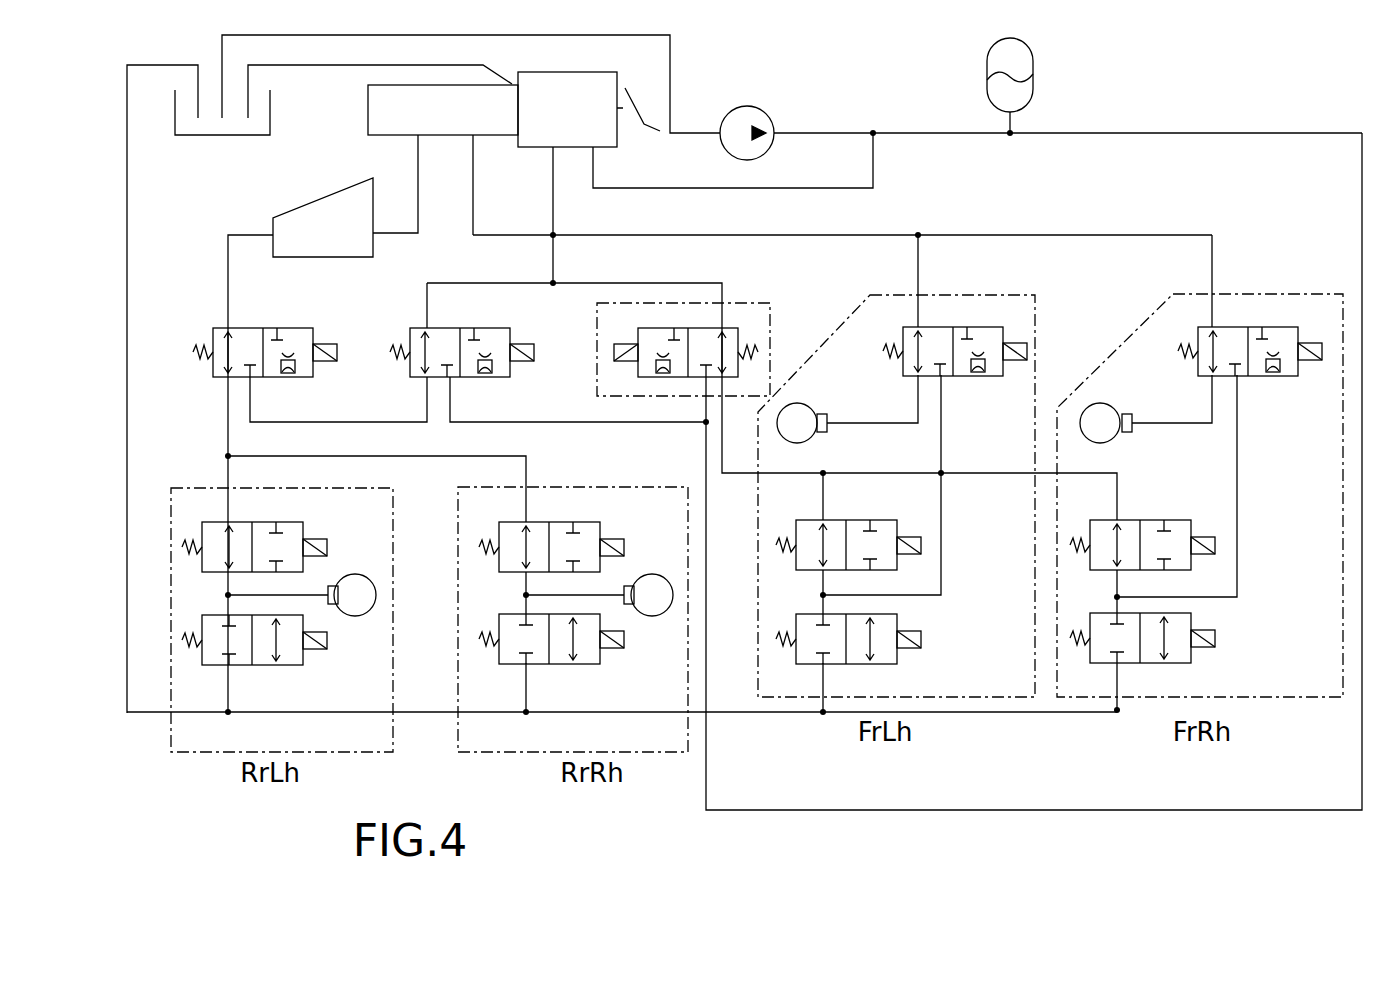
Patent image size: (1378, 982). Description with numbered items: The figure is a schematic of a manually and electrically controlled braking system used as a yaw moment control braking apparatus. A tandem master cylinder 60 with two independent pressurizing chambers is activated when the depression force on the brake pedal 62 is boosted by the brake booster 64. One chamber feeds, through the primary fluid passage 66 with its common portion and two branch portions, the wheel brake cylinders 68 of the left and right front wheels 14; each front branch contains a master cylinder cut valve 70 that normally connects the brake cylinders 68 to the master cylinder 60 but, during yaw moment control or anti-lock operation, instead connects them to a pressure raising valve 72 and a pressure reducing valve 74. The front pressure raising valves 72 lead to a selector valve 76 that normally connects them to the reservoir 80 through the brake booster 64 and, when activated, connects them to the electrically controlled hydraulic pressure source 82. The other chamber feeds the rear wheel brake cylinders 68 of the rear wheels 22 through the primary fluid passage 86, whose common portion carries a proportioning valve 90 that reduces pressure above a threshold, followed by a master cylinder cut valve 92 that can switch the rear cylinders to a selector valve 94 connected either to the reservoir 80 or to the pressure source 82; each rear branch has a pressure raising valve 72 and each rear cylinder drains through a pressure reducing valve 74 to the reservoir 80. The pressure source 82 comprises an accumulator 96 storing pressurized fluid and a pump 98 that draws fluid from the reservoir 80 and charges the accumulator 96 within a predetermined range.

The front wheels 14 is at (797, 410).
The rear wheels 22 is at (360, 585).
The master cylinder 60 is at (372, 105).
The brake pedal 62 is at (643, 128).
The brake booster 64 is at (535, 118).
The primary fluid passage 66 is at (846, 225).
The wheel brake cylinders 68 is at (822, 436).
The master cylinder cut valve 70 is at (999, 372).
The pressure raising valve 72 is at (290, 525).
The pressure reducing valve 74 is at (285, 660).
The selector valve 76 is at (640, 330).
The reservoir 80 is at (204, 137).
The electrically controlled hydraulic pressure source 82 is at (980, 158).
The primary fluid passage 86 is at (211, 255).
The proportioning valve 90 is at (343, 245).
The master cylinder cut valve 92 is at (303, 333).
The selector valve 94 is at (487, 335).
The accumulator 96 is at (1033, 62).
The pump 98 is at (755, 118).